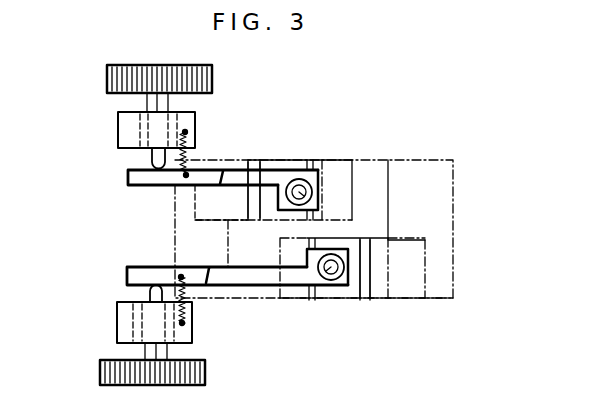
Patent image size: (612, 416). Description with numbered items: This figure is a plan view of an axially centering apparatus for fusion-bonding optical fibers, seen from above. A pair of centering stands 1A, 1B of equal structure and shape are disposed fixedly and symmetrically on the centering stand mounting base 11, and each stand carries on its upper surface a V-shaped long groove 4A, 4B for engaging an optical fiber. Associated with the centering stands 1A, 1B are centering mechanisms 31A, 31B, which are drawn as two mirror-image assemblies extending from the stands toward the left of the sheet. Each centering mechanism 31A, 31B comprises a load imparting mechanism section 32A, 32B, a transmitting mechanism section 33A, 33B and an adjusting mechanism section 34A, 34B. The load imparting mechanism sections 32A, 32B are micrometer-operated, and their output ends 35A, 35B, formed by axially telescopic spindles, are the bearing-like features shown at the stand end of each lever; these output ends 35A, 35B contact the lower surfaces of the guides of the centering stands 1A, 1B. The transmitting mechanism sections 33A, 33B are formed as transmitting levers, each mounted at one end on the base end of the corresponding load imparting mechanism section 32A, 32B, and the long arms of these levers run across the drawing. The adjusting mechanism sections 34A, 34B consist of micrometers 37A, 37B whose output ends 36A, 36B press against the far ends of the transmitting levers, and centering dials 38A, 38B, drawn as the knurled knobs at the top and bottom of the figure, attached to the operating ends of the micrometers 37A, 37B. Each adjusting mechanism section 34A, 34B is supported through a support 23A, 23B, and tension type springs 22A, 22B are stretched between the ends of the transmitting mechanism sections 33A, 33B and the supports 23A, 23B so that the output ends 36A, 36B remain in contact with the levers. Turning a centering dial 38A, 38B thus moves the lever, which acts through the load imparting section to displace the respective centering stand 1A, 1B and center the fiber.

The centering stand mounting base 11 is at (458, 198).
The centering stand 1A is at (392, 290).
The centering stand 1B is at (236, 168).
The V-shaped long groove 4A is at (322, 292).
The V-shaped long groove 4B is at (310, 168).
The tension type spring 22A is at (184, 289).
The tension type spring 22B is at (200, 167).
The support 23A is at (193, 332).
The support 23B is at (128, 122).
The centering mechanism 31A is at (119, 269).
The centering mechanism 31B is at (127, 176).
The load imparting mechanism section 32A is at (342, 250).
The load imparting mechanism section 32B is at (318, 182).
The transmitting mechanism section 33A is at (294, 281).
The transmitting mechanism section 33B is at (268, 175).
The adjusting mechanism section 34A is at (140, 351).
The adjusting mechanism section 34B is at (172, 102).
The output end 35A is at (340, 268).
The output end 35B is at (302, 192).
The output end 36A is at (150, 293).
The output end 36B is at (155, 167).
The micrometer 37A is at (156, 352).
The micrometer 37B is at (157, 103).
The centering dial 38A is at (206, 374).
The centering dial 38B is at (212, 80).